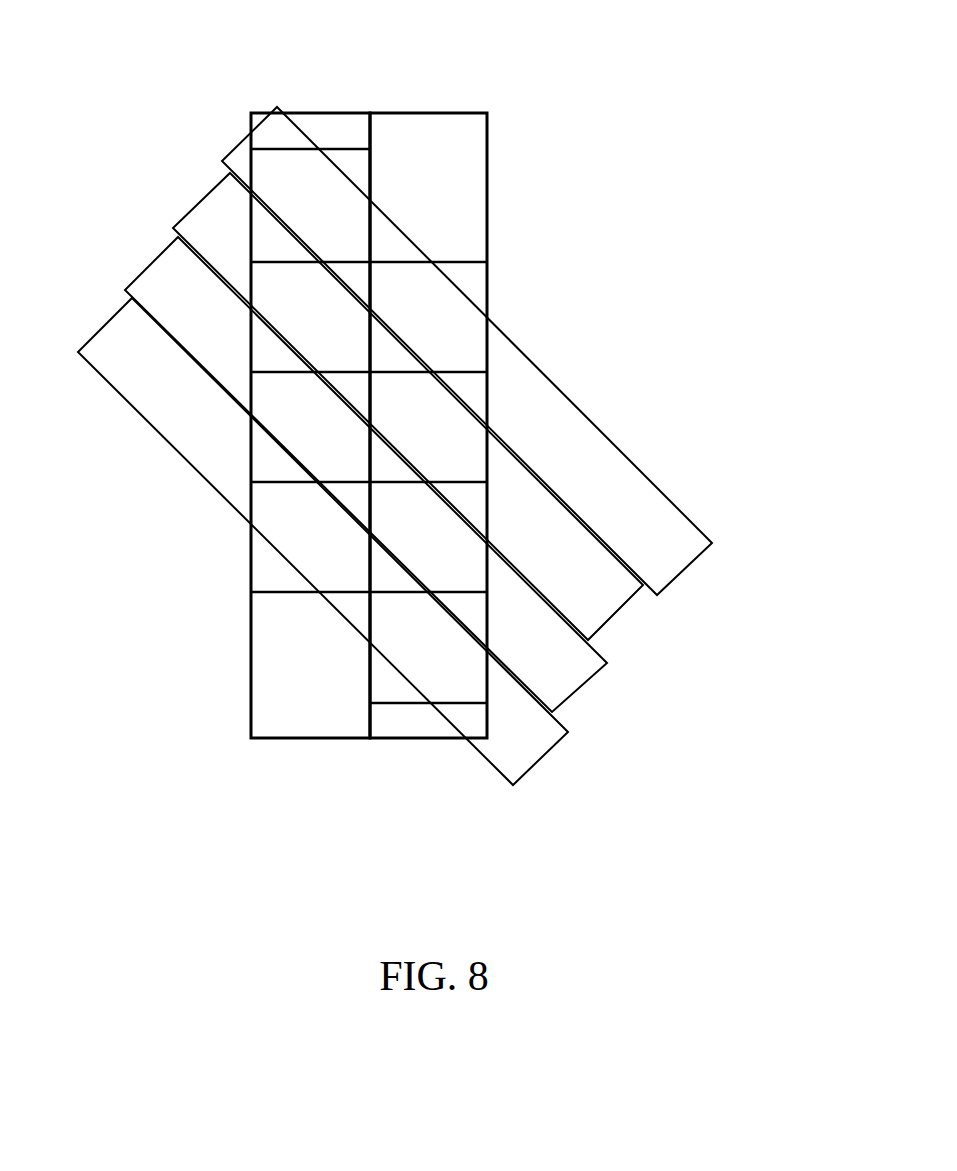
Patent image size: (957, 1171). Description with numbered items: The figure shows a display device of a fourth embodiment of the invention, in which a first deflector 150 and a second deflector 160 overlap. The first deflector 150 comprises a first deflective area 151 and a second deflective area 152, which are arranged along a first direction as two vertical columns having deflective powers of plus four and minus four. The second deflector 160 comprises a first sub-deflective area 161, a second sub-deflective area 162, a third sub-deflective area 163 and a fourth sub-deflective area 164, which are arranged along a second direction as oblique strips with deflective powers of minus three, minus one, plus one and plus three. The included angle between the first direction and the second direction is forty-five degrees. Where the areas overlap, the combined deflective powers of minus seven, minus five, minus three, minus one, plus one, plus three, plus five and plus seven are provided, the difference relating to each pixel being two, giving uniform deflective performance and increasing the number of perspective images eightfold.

The first deflector 150 is at (526, 377).
The first deflective area 151 is at (342, 125).
The second deflective area 152 is at (465, 127).
The second deflector 160 is at (439, 470).
The first sub-deflective area 161 is at (673, 568).
The second sub-deflective area 162 is at (610, 610).
The third sub-deflective area 163 is at (558, 690).
The fourth sub-deflective area 164 is at (523, 760).